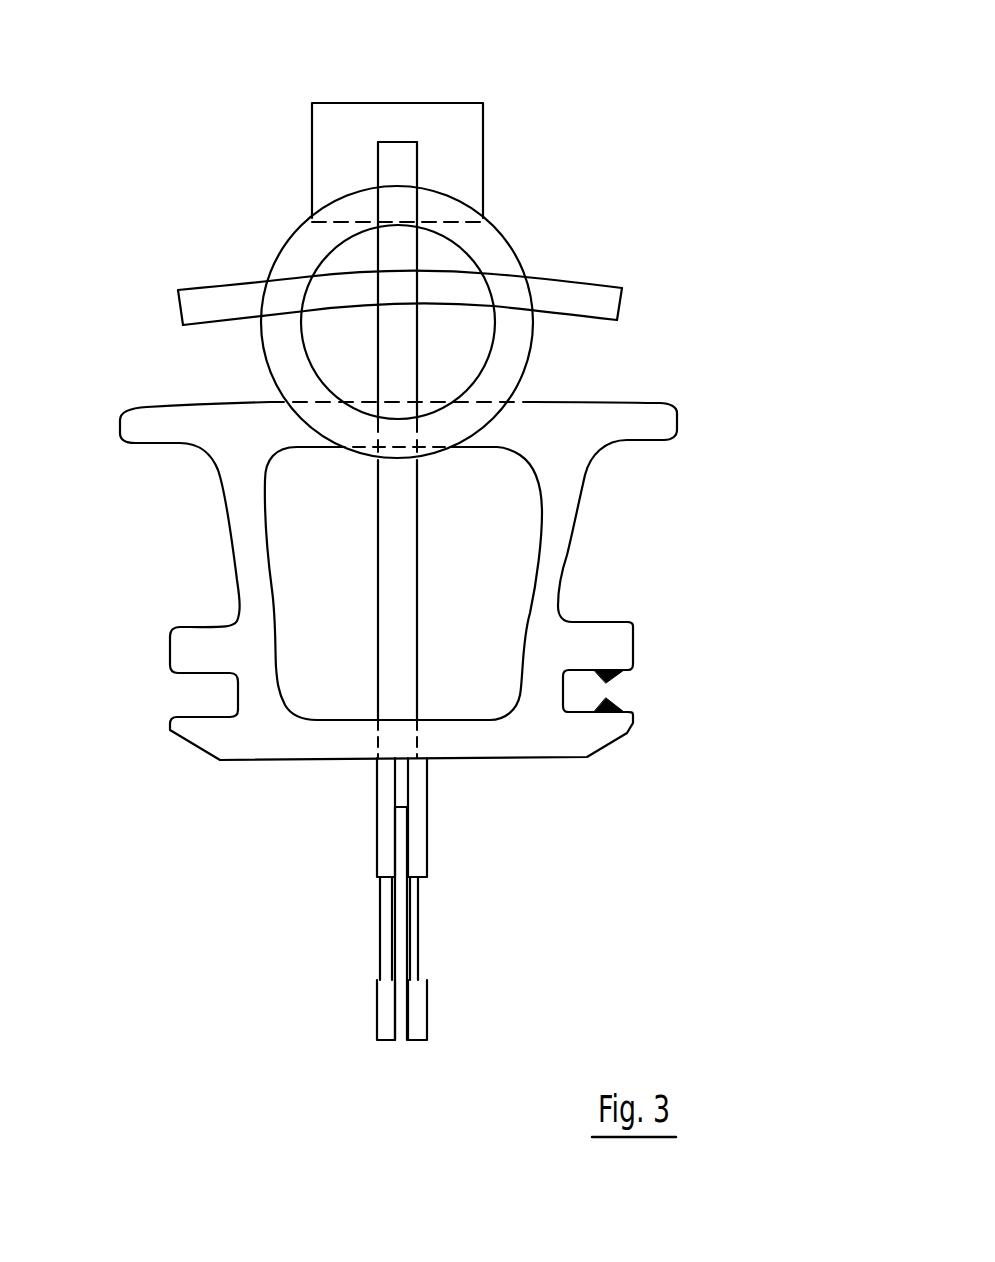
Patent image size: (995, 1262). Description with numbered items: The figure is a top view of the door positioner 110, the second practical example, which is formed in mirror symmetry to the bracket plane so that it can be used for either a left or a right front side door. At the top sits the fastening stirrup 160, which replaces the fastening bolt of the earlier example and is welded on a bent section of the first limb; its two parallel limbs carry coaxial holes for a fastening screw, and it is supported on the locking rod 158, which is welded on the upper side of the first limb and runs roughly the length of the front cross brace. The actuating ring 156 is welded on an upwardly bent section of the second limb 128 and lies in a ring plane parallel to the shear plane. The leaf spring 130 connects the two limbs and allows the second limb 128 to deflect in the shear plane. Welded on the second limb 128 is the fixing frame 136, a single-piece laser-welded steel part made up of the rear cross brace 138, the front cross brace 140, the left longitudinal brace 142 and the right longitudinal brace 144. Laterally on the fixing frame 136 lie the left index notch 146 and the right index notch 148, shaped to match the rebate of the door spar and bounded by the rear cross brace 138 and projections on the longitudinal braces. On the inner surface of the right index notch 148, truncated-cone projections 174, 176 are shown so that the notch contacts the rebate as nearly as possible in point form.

The door positioner 110 is at (162, 118).
The second limb 128 is at (393, 543).
The leaf spring 130 is at (402, 923).
The fixing frame 136 is at (623, 492).
The rear cross brace 138 is at (517, 745).
The front cross brace 140 is at (540, 410).
The left longitudinal brace 142 is at (240, 540).
The right longitudinal brace 144 is at (553, 570).
The left index notch 146 is at (198, 700).
The right index notch 148 is at (603, 687).
The actuating ring 156 is at (485, 257).
The locking rod 158 is at (590, 306).
The fastening stirrup 160 is at (485, 125).
The projection 174 is at (627, 698).
The projection 176 is at (625, 677).